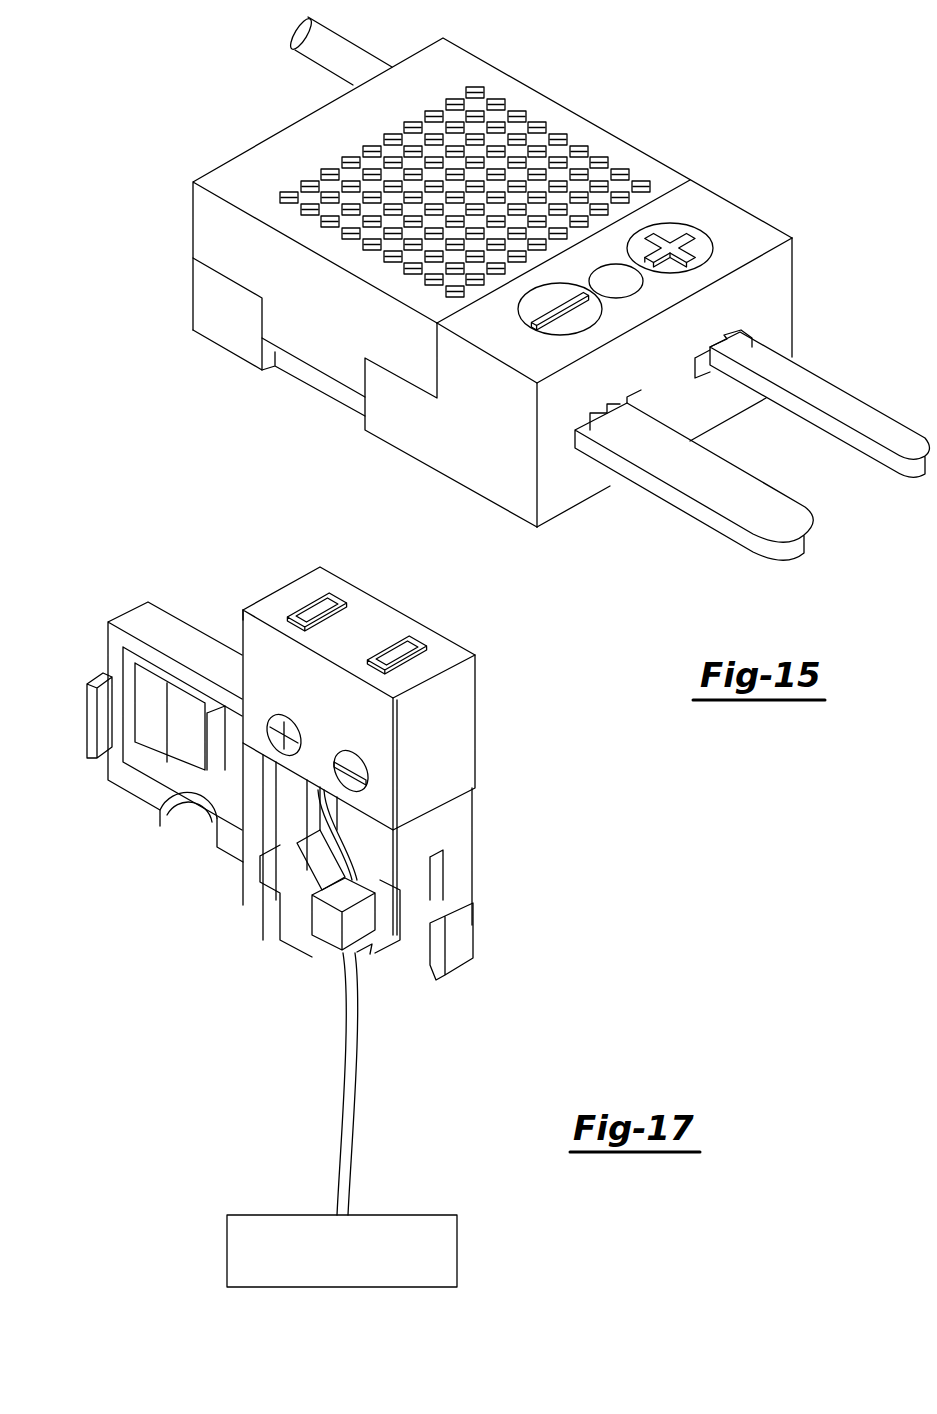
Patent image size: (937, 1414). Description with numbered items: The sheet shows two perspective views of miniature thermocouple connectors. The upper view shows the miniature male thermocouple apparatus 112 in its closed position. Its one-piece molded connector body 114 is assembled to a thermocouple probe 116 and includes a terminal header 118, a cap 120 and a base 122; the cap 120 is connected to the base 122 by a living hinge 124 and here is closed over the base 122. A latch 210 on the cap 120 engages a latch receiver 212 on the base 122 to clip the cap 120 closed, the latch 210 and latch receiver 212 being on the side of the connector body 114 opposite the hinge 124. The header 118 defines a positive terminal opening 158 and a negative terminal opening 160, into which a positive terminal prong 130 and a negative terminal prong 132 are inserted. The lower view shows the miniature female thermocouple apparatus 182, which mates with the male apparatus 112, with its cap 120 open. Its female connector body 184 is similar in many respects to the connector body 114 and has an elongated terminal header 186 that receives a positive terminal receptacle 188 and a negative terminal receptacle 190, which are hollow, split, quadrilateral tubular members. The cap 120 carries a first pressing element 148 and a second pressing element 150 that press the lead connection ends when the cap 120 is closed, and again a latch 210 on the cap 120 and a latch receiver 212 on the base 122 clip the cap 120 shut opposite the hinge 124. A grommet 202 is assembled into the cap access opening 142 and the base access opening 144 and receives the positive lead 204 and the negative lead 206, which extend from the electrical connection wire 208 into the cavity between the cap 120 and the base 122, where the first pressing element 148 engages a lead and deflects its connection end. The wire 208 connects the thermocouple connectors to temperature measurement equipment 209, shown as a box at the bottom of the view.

In FIG. 15, the miniature male thermocouple apparatus 112 is at (663, 124).
In FIG. 15, the connector body 114 is at (740, 195).
In FIG. 15, the thermocouple probe 116 is at (333, 47).
In FIG. 15, the terminal header 118 is at (558, 497).
In FIG. 15, the cap 120 is at (270, 167).
In FIG. 17, the cap 120 is at (127, 787).
In FIG. 15, the base 122 is at (200, 299).
In FIG. 17, the base 122 is at (457, 943).
In FIG. 17, the living hinge 124 is at (267, 855).
In FIG. 15, the positive terminal prong 130 is at (883, 433).
In FIG. 15, the negative terminal prong 132 is at (745, 505).
In FIG. 17, the cap access opening 142 is at (203, 813).
In FIG. 17, the base access opening 144 is at (375, 948).
In FIG. 17, the first pressing element 148 is at (213, 728).
In FIG. 17, the second pressing element 150 is at (142, 688).
In FIG. 15, the positive terminal opening 158 is at (750, 345).
In FIG. 15, the negative terminal opening 160 is at (588, 428).
In FIG. 17, the miniature female thermocouple apparatus 182 is at (395, 583).
In FIG. 17, the female connector body 184 is at (484, 723).
In FIG. 17, the terminal header 186 is at (268, 613).
In FIG. 17, the positive terminal receptacle 188 is at (327, 602).
In FIG. 17, the negative terminal receptacle 190 is at (412, 648).
In FIG. 17, the grommet 202 is at (327, 923).
In FIG. 17, the positive lead 204 is at (365, 892).
In FIG. 17, the negative lead 206 is at (360, 885).
In FIG. 17, the electrical connection wire 208 is at (350, 1142).
In FIG. 17, the temperature measurement equipment 209 is at (227, 1252).
In FIG. 15, the latch 210 is at (293, 357).
In FIG. 17, the latch 210 is at (87, 708).
In FIG. 15, the latch receiver 212 is at (318, 378).
In FIG. 17, the latch receiver 212 is at (445, 890).